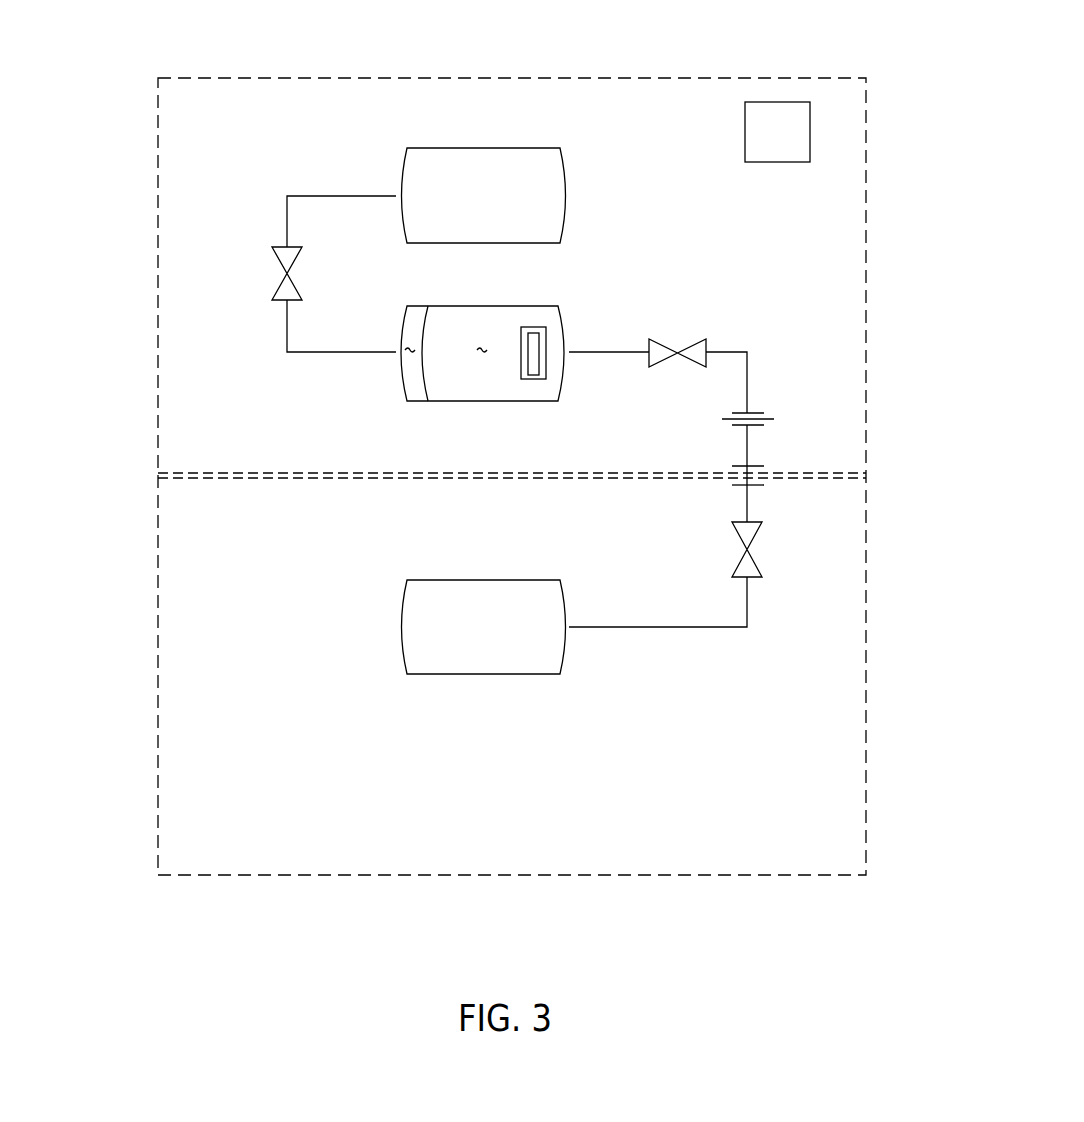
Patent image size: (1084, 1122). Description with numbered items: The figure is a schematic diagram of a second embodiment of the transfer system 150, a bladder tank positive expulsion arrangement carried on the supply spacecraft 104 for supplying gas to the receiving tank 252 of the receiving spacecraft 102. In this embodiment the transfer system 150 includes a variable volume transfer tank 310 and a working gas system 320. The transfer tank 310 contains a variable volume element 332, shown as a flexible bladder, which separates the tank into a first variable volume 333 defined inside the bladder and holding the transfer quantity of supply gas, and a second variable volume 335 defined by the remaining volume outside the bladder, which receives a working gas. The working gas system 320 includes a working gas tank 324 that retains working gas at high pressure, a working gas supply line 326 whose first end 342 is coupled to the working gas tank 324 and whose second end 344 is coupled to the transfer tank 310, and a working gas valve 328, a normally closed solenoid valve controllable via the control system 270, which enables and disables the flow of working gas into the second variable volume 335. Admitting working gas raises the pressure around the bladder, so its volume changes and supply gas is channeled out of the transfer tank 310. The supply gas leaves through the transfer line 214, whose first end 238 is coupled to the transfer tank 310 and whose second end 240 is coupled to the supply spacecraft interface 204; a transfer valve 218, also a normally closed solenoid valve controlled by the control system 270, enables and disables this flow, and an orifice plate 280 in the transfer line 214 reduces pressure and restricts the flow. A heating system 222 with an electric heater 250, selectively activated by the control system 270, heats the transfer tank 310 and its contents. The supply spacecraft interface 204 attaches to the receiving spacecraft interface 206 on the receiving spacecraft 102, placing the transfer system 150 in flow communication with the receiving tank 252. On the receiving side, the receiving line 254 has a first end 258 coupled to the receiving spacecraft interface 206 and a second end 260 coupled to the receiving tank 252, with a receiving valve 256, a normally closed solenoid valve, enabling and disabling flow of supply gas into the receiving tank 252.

The receiving spacecraft 102 is at (866, 676).
The supply spacecraft 104 is at (732, 78).
The transfer system 150 is at (130, 92).
The supply spacecraft interface 204 is at (752, 465).
The receiving spacecraft interface 206 is at (752, 486).
The transfer line 214 is at (748, 385).
The transfer valve 218 is at (653, 367).
The heating system 222 is at (527, 327).
The first end 238 is at (572, 355).
The second end 240 is at (750, 460).
The electric heater 250 is at (539, 342).
The receiving tank 252 is at (452, 675).
The receiving line 254 is at (667, 628).
The receiving valve 256 is at (753, 580).
The first end 258 is at (753, 492).
The second end 260 is at (572, 628).
The control system 270 is at (765, 132).
The orifice plate 280 is at (728, 420).
The variable volume transfer tank 310 is at (407, 307).
The working gas system 320 is at (187, 420).
The working gas tank 324 is at (452, 148).
The working gas supply line 326 is at (305, 355).
The working gas valve 328 is at (278, 245).
The variable volume element 332 is at (423, 383).
The first variable volume 333 is at (482, 348).
The second variable volume 335 is at (410, 348).
The first end 342 is at (395, 194).
The second end 344 is at (397, 352).